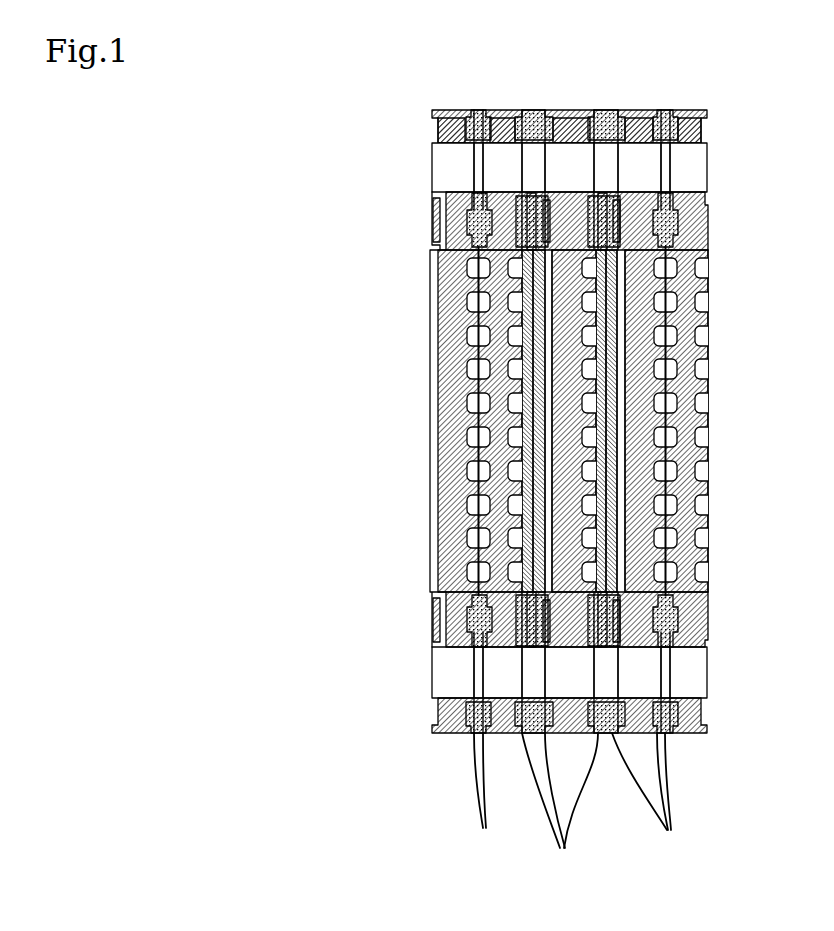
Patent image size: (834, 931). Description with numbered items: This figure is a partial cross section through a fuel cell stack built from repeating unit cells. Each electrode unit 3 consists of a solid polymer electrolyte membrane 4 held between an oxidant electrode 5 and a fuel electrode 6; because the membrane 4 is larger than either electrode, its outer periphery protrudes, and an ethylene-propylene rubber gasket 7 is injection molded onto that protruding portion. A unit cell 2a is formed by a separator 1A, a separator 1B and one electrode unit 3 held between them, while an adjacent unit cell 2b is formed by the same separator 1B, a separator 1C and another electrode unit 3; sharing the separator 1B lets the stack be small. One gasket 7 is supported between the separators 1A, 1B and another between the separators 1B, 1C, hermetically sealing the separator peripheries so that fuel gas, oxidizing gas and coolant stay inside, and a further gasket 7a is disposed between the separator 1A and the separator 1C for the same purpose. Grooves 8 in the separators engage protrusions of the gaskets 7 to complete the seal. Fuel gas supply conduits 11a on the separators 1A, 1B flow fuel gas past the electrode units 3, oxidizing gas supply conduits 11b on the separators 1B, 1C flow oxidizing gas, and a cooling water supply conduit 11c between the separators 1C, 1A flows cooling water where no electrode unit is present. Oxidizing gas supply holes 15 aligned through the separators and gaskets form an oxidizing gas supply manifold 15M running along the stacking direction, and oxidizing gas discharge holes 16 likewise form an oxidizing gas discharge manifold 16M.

The separator 1A is at (494, 108).
The separator 1B is at (578, 108).
The separator 1C is at (449, 108).
The unit cell 2a is at (585, 735).
The unit cell 2b is at (653, 737).
The electrode unit 3 is at (521, 469).
The solid polymer electrolyte membrane 4 is at (603, 398).
The oxidant electrode 5 is at (616, 425).
The fuel electrode 6 is at (600, 411).
The gasket 7 is at (535, 113).
The gasket 7a is at (479, 113).
The grooves 8 is at (576, 800).
The fuel gas supply conduits 11a is at (587, 303).
The oxidizing gas supply conduits 11b is at (600, 323).
The cooling water supply conduit 11c is at (480, 505).
The oxidizing gas supply holes 15 is at (640, 179).
The oxidizing gas supply manifold 15M is at (697, 160).
The oxidizing gas discharge holes 16 is at (638, 686).
The oxidizing gas discharge manifold 16M is at (697, 670).